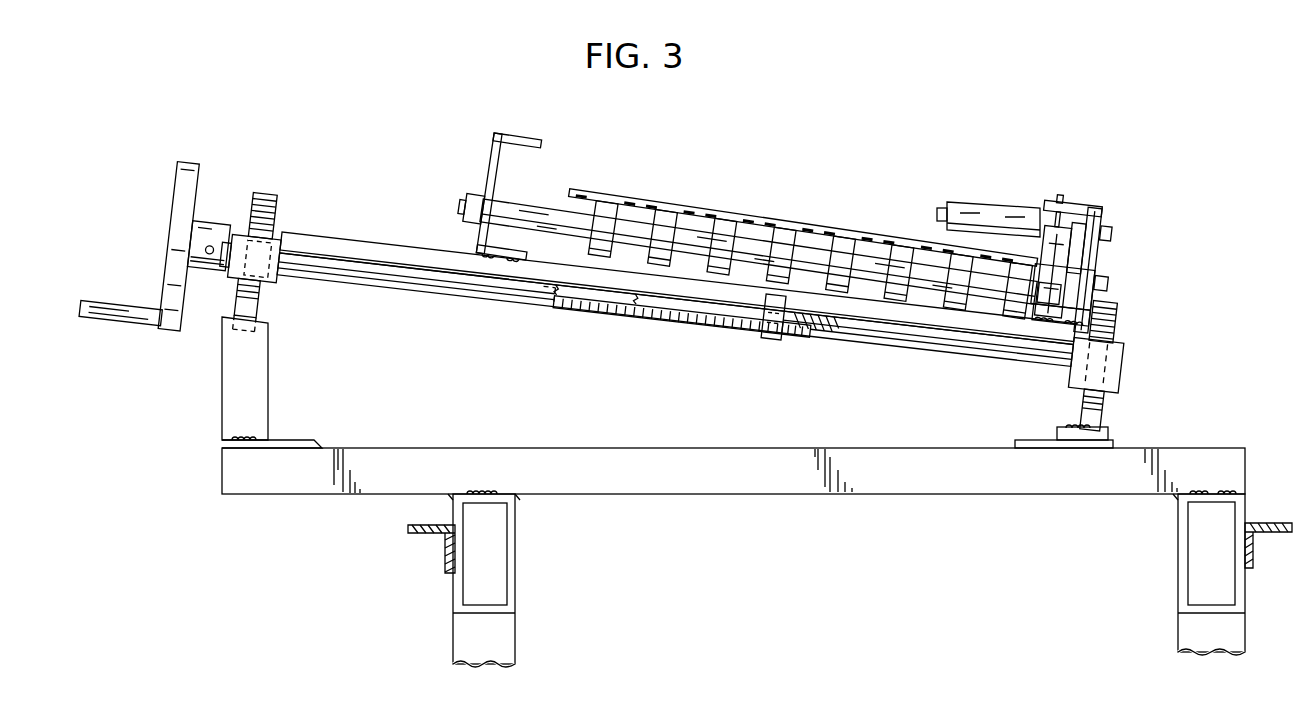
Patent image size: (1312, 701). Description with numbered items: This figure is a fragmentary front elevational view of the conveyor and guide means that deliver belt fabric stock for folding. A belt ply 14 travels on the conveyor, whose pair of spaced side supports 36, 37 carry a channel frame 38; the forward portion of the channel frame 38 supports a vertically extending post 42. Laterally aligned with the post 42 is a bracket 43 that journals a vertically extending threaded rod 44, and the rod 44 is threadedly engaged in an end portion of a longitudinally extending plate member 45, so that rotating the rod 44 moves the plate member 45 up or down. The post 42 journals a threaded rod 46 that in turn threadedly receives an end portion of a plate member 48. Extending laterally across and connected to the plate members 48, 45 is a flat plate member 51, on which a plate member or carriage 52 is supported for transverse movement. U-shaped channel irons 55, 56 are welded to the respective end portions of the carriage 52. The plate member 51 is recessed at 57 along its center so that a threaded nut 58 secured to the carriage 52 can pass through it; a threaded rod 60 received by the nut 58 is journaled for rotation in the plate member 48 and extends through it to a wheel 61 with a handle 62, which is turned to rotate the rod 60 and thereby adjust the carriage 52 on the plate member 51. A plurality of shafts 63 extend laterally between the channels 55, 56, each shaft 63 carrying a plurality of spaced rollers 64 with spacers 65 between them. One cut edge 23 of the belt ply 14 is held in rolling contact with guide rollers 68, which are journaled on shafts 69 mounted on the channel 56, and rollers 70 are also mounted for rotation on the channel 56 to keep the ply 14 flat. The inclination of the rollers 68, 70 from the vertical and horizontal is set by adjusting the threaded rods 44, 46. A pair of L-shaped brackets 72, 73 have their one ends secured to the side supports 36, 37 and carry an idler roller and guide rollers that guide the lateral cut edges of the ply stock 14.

The belt ply 14 is at (767, 202).
The cut edge 23 is at (1043, 247).
The side support 36 is at (512, 550).
The side support 37 is at (1185, 572).
The channel frame 38 is at (676, 478).
The post 42 is at (262, 397).
The bracket 43 is at (1050, 433).
The threaded rod 44 is at (1100, 405).
The plate member 45 is at (1117, 367).
The threaded rod 46 is at (258, 289).
The plate member 48 is at (236, 272).
The flat plate member 51 is at (392, 247).
The carriage 52 is at (904, 320).
The U-shaped channel iron 55 is at (490, 138).
The U-shaped channel iron 56 is at (1095, 210).
The recess 57 is at (559, 285).
The threaded nut 58 is at (771, 343).
The threaded rod 60 is at (647, 313).
The wheel 61 is at (180, 210).
The handle 62 is at (118, 318).
The shaft 63 is at (1107, 287).
The roller 64 is at (665, 224).
The spacer 65 is at (540, 220).
The guide roller 68 is at (1075, 270).
The shaft 69 is at (1060, 200).
The roller 70 is at (968, 205).
The L-shaped bracket 72 is at (1253, 545).
The L-shaped bracket 73 is at (447, 553).